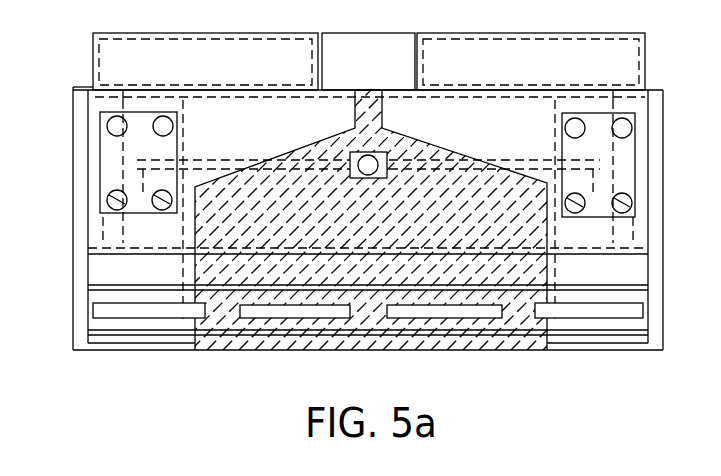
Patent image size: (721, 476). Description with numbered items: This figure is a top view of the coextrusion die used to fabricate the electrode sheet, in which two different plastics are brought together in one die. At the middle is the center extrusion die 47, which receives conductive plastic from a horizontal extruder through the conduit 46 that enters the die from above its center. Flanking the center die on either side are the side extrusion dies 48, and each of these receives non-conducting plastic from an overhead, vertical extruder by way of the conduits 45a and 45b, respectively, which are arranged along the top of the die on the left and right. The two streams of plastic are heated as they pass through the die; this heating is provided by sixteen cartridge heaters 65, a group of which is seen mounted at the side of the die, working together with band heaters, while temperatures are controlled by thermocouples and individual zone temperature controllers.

The conduit 45a is at (202, 158).
The conduit 45b is at (533, 158).
The conduit 46 is at (378, 110).
The center extrusion die 47 is at (385, 345).
The side extrusion dies 48 is at (140, 340).
The cartridge heaters 65 is at (104, 240).